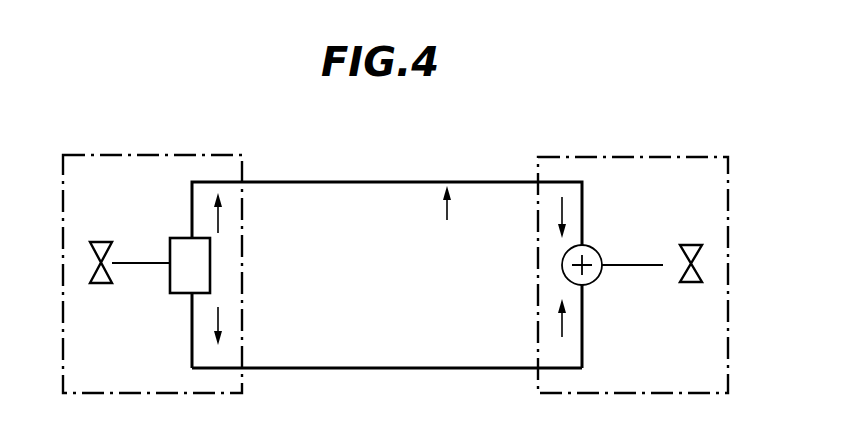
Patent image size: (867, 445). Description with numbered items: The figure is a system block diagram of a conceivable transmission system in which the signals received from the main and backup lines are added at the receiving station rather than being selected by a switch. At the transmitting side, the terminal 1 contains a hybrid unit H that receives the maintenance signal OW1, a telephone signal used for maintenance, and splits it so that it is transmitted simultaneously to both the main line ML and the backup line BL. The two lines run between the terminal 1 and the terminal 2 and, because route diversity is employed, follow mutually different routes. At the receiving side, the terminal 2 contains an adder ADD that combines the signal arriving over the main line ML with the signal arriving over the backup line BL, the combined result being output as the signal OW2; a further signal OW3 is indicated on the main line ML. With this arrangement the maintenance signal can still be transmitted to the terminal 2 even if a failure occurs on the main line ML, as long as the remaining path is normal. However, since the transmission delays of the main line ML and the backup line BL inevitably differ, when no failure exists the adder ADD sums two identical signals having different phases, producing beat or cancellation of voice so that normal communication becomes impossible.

The terminal 1 is at (155, 155).
The terminal 2 is at (633, 157).
The main line ML is at (283, 182).
The backup line BL is at (318, 370).
The hybrid unit H is at (190, 265).
The adder ADD is at (592, 246).
The maintenance signal OW1 is at (125, 282).
The maintenance signal OW2 is at (652, 284).
The maintenance signal OW3 is at (440, 219).